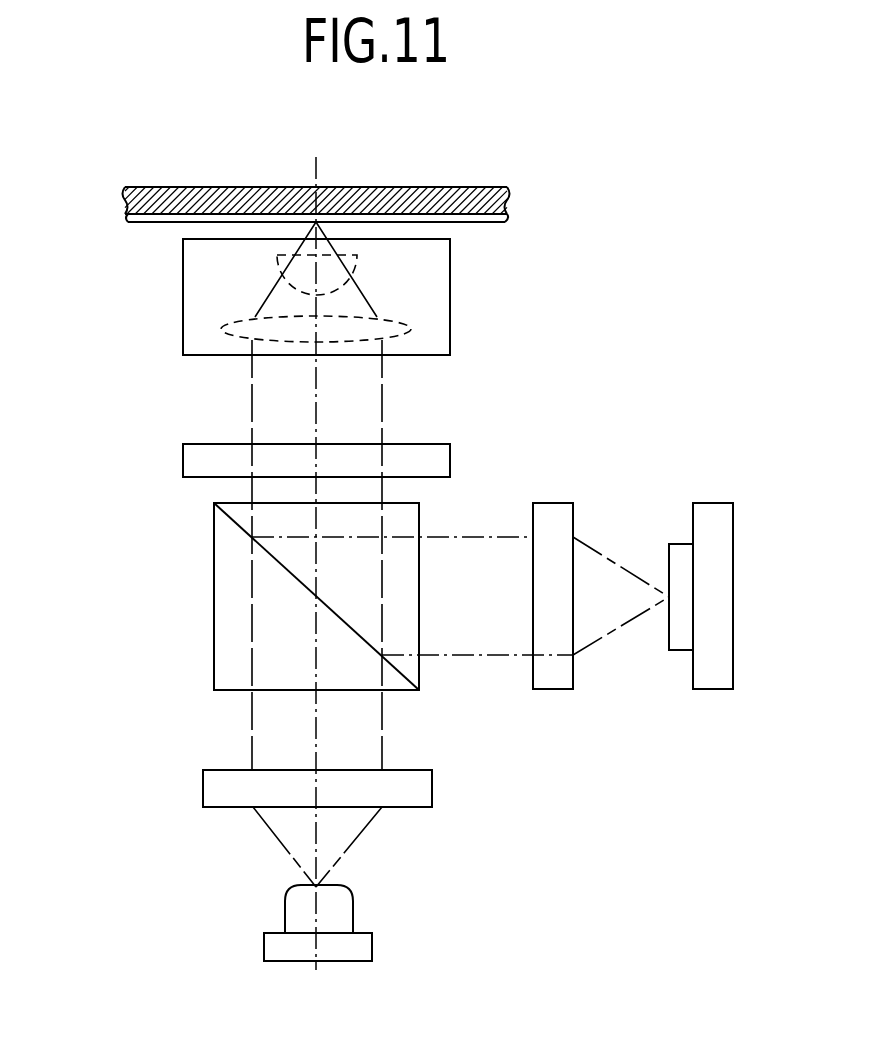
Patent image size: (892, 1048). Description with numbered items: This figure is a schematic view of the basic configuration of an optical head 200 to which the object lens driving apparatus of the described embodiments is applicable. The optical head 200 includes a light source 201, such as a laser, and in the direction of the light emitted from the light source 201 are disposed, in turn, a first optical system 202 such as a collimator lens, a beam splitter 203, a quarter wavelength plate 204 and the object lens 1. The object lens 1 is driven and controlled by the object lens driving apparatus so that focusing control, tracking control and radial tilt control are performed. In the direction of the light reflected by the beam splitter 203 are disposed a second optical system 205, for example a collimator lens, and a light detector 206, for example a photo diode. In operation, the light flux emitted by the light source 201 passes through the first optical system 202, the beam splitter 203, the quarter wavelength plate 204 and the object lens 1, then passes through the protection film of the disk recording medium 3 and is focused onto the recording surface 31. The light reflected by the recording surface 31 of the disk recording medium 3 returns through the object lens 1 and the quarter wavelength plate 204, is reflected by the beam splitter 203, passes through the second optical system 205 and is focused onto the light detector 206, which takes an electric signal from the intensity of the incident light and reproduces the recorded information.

The object lens 1 is at (215, 247).
The disk recording medium 3 is at (473, 193).
The recording surface 31 is at (467, 216).
The optical head 200 is at (520, 921).
The light source 201 is at (296, 913).
The first optical system 202 is at (203, 787).
The beam splitter 203 is at (214, 595).
The 1/4 wavelength plate 204 is at (183, 458).
The second optical system 205 is at (553, 503).
The light detector 206 is at (713, 503).